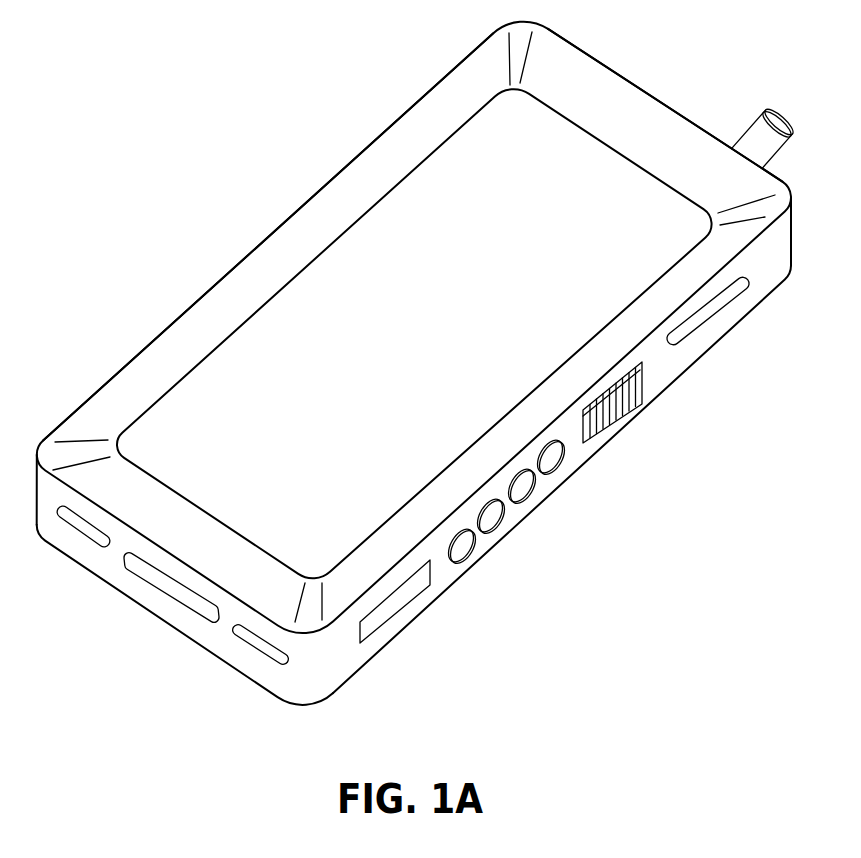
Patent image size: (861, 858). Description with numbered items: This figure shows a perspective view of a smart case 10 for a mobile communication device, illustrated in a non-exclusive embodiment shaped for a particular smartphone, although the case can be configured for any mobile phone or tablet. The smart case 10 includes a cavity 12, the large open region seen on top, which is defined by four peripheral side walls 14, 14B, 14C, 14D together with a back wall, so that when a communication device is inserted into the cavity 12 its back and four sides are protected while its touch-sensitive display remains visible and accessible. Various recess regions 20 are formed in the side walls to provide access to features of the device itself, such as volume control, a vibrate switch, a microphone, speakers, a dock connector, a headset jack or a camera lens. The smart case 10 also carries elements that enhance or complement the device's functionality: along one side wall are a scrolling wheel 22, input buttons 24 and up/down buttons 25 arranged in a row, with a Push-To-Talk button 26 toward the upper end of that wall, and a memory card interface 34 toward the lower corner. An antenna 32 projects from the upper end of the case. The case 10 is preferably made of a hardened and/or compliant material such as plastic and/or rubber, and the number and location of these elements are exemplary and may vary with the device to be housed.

The smart case 10 is at (419, 411).
The cavity 12 is at (431, 339).
The peripheral side wall 14 is at (330, 675).
The peripheral side wall 14B is at (638, 107).
The peripheral side wall 14C is at (278, 248).
The peripheral side wall 14D is at (235, 648).
The recess region 20 is at (65, 530).
The scrolling wheel 22 is at (623, 408).
The input button 24 is at (556, 463).
The up/down button 25 is at (465, 548).
The Push-To-Talk (PTT) button 26 is at (722, 303).
The antenna 32 is at (789, 115).
The memory card interface 34 is at (400, 598).